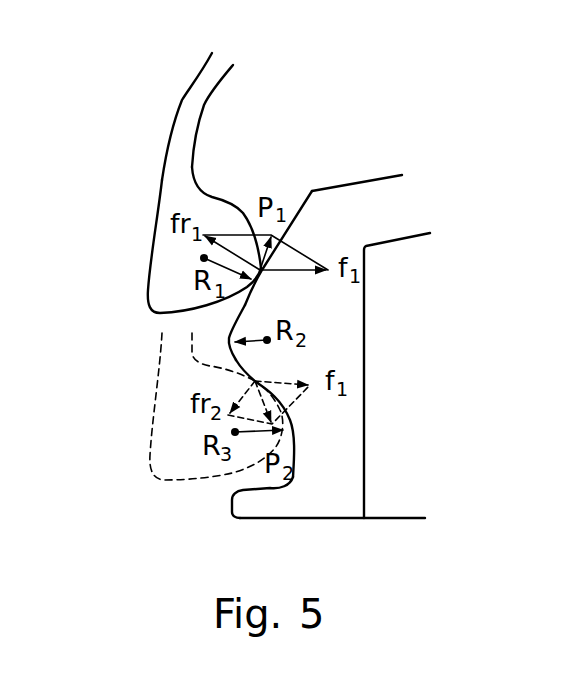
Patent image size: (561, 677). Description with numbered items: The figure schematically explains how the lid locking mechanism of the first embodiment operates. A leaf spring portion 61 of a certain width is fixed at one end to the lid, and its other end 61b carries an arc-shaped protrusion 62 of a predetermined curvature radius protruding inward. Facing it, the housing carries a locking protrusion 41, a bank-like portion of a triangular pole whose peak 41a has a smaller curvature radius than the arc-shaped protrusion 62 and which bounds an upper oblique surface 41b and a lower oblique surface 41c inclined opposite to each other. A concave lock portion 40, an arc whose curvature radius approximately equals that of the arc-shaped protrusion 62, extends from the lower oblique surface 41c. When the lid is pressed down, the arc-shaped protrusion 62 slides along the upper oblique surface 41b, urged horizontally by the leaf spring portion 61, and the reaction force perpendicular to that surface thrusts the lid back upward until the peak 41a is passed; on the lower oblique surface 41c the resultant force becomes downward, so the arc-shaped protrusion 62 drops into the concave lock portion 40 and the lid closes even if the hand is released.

The concave lock portion 40 is at (293, 477).
The locking protrusion 41 is at (263, 346).
The peak 41a is at (233, 353).
The upper oblique surface 41b is at (249, 304).
The lower oblique surface 41c is at (290, 400).
The leaf spring portion 61 is at (178, 110).
The other end of leaf spring portion 61b is at (183, 177).
The arc-shaped protrusion 62 is at (153, 238).